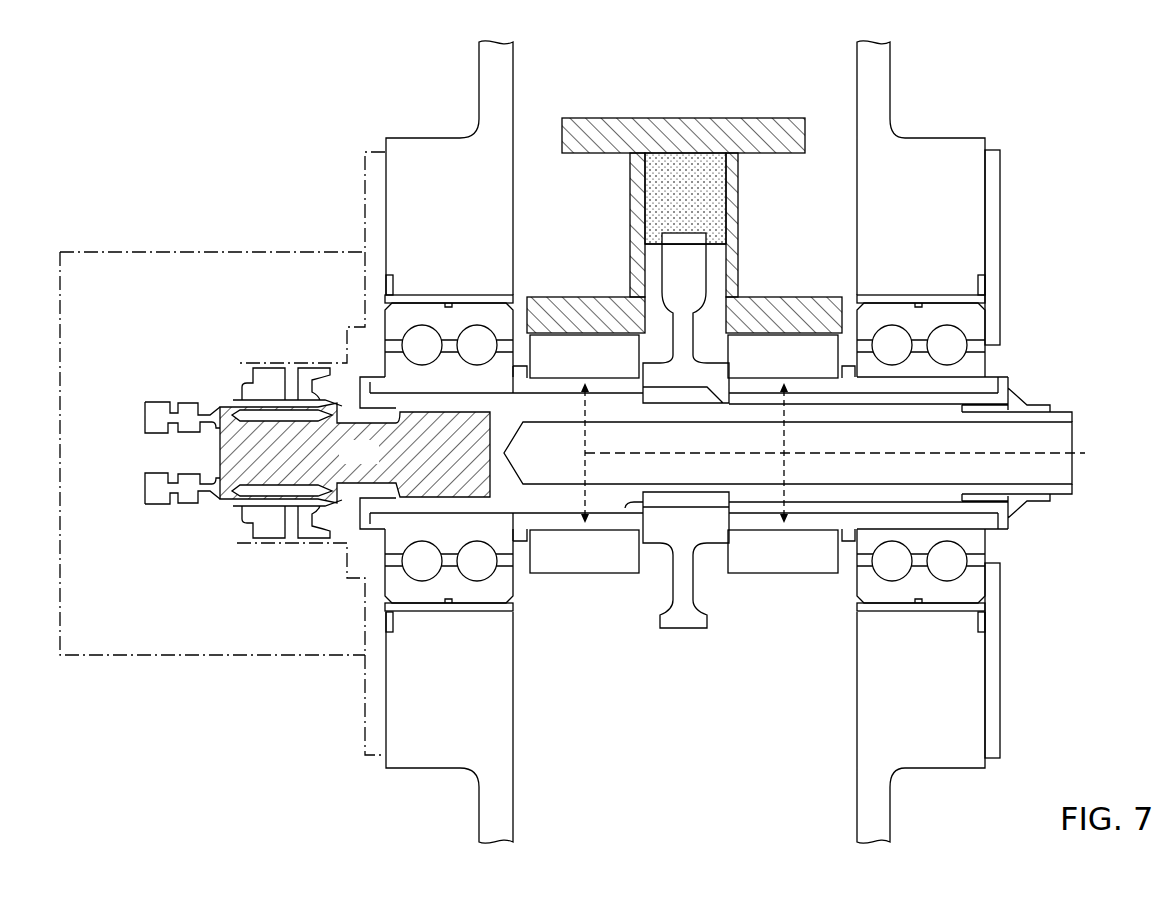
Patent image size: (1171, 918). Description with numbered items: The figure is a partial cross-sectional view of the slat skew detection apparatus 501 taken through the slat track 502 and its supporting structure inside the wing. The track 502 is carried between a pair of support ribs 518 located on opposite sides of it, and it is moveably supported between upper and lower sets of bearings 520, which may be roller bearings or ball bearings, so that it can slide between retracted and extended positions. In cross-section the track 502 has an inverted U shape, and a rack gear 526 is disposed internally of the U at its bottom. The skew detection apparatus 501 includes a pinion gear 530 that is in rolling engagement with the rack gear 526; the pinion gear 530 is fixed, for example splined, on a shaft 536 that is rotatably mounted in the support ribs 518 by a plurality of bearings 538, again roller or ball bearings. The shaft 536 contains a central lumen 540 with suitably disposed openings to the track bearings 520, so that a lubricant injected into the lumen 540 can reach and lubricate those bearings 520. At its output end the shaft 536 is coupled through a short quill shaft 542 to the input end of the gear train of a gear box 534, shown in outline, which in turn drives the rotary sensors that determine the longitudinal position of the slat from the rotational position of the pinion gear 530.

The skew detection apparatus 501 is at (242, 155).
The slat track 502 is at (768, 118).
The support ribs 518 is at (419, 138).
The bearings 520 is at (600, 364).
The rack gear 526 is at (700, 194).
The pinion gear 530 is at (652, 240).
The gear box 534 is at (106, 250).
The shaft 536 is at (349, 528).
The bearings 538 is at (385, 585).
The central lumen 540 is at (1087, 452).
The quill shaft 542 is at (373, 461).